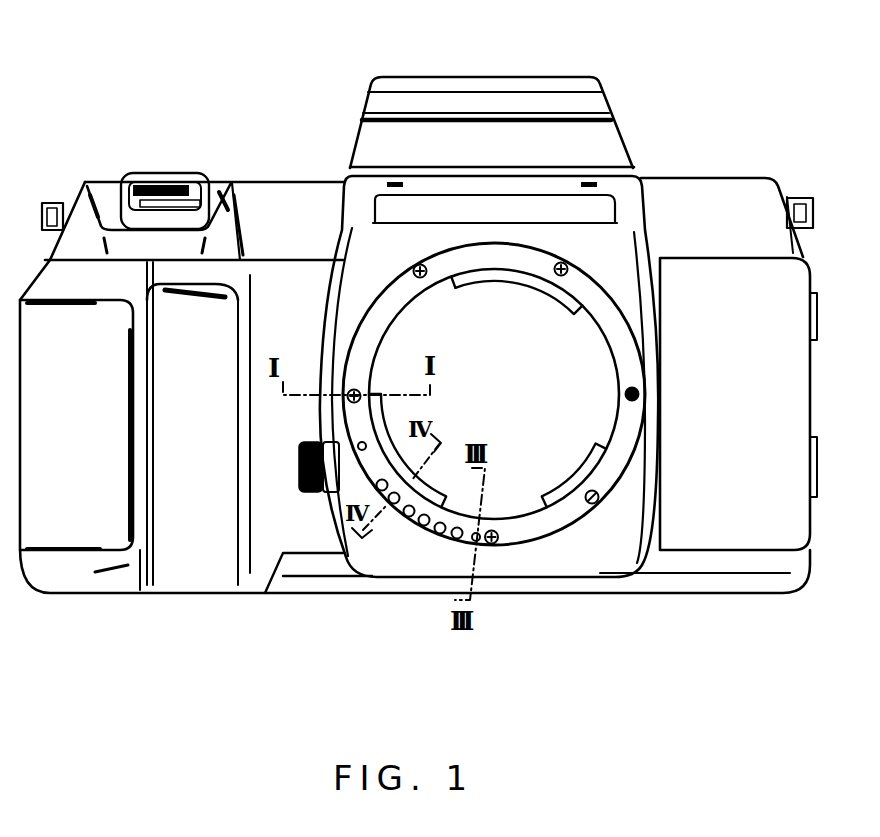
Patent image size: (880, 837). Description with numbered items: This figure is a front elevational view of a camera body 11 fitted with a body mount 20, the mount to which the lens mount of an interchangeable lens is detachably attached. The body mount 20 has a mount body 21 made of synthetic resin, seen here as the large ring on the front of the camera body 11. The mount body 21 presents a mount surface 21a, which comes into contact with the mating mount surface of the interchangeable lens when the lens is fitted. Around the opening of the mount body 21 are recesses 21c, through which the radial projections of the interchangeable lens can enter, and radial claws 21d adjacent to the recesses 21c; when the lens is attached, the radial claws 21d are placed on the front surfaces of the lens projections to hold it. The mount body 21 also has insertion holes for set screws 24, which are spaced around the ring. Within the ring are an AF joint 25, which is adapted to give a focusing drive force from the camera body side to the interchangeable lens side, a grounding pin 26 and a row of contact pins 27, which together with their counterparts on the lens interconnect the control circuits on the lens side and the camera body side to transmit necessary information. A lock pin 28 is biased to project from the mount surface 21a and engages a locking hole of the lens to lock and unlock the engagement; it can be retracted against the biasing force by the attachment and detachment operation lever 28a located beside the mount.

The camera body 11 is at (172, 110).
The body mount 20 is at (597, 258).
The mount body 21 is at (630, 337).
The mount surface 21a is at (537, 265).
The recesses 21c is at (449, 283).
The radial claws 21d is at (529, 284).
The set screws 24 is at (359, 388).
The AF joint 25 is at (589, 505).
The grounding pin 26 is at (485, 532).
The contact pins 27 is at (461, 542).
The lock pin 28 is at (357, 442).
The attachment and detachment operation lever 28a is at (300, 478).